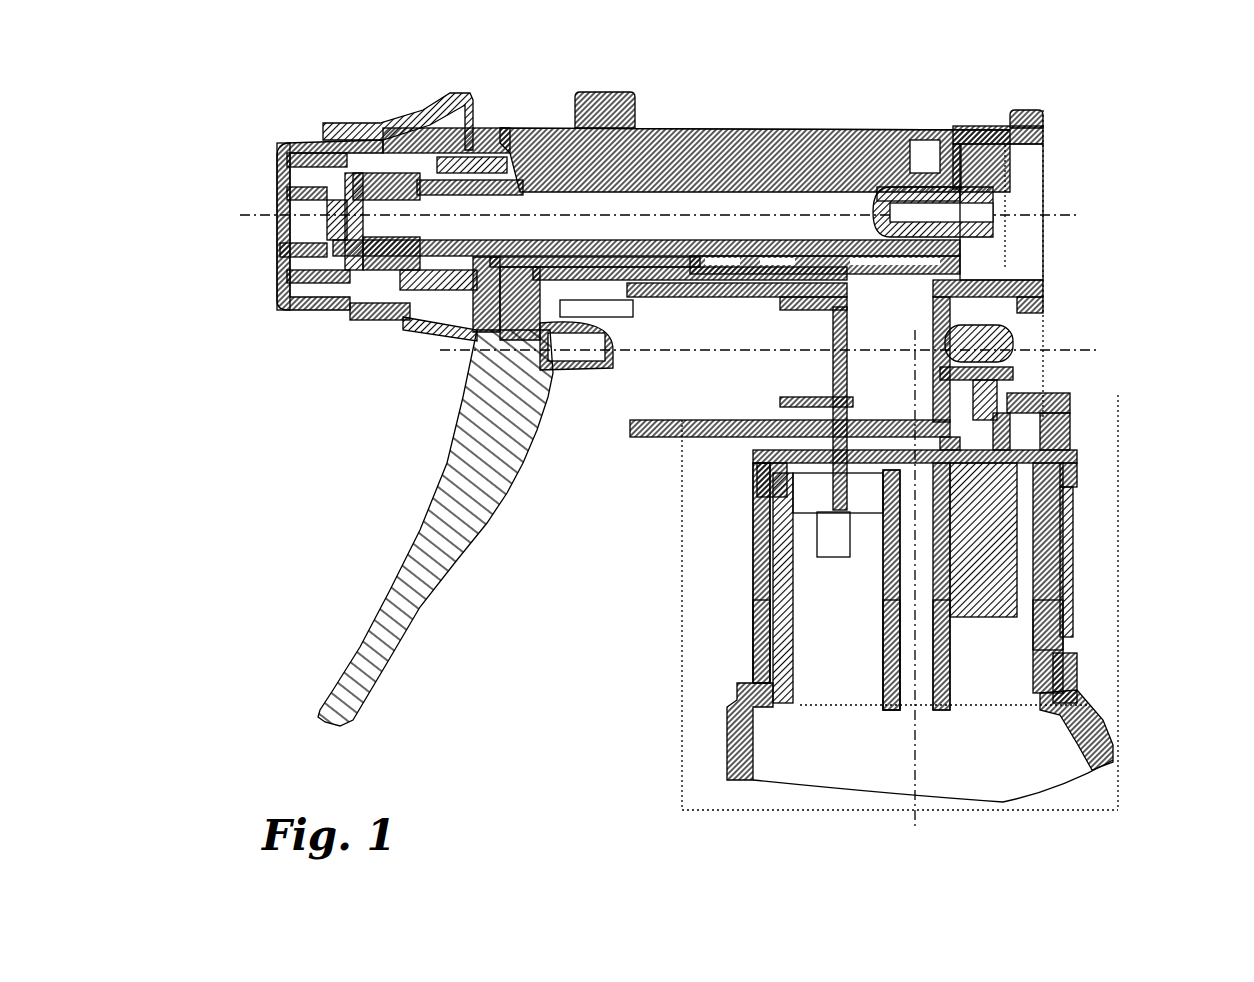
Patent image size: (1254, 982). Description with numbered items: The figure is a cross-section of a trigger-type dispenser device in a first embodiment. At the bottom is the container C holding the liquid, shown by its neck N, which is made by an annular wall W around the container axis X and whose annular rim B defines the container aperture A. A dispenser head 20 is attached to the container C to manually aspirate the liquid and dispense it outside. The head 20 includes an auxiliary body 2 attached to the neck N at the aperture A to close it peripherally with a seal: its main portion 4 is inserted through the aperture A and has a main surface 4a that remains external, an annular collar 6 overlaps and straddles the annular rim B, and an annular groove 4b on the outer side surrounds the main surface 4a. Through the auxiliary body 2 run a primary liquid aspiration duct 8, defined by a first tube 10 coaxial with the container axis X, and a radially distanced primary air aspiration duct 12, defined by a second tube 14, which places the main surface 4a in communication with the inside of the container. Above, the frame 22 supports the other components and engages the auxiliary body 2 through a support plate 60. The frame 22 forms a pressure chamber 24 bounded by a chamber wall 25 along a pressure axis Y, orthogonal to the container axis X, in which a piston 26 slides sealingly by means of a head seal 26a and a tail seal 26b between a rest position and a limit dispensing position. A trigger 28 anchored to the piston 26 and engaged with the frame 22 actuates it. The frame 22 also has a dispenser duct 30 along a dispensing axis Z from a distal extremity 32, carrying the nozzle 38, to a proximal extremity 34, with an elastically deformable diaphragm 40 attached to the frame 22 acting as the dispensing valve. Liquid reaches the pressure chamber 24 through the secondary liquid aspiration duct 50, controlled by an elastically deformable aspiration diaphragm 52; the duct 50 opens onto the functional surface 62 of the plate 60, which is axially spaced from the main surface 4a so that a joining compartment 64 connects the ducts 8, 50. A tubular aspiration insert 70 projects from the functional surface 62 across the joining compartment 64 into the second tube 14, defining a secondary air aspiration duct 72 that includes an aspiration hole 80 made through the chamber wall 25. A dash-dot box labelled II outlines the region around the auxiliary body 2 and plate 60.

The auxiliary body 2 is at (1068, 583).
The main portion 4 is at (1000, 690).
The main surface 4a is at (1040, 440).
The annular groove 4b is at (1065, 550).
The annular collar 6 is at (1066, 478).
The primary liquid aspiration duct 8 is at (930, 695).
The first tube 10 is at (950, 655).
The primary air aspiration duct 12 is at (770, 560).
The second tube 14 is at (780, 510).
The dispenser head 20 is at (238, 193).
The frame 22 is at (748, 121).
The pressure chamber 24 is at (1017, 268).
The chamber wall 25 is at (683, 122).
The piston 26 is at (890, 343).
The head seal 26a is at (868, 190).
The tail seal 26b is at (813, 126).
The trigger 28 is at (392, 547).
The dispenser duct 30 is at (578, 110).
The distal extremity 32 is at (415, 165).
The proximal extremity 34 is at (920, 132).
The nozzle 38 is at (262, 144).
The elastically deformable diaphragm 40 is at (1023, 240).
The secondary liquid aspiration duct 50 is at (985, 410).
The aspiration diaphragm 52 is at (1004, 332).
The support plate 60 is at (1062, 448).
The functional surface 62 is at (1063, 625).
The joining compartment 64 is at (1080, 690).
The tubular aspiration insert 70 is at (760, 440).
The secondary air aspiration duct 72 is at (853, 490).
The aspiration hole 80 is at (815, 395).
The container aperture A is at (1045, 497).
The annular rim B is at (783, 465).
The container C is at (724, 738).
The neck N is at (750, 648).
The annular wall W is at (780, 531).
The container axis X is at (913, 757).
The pressure axis Y is at (440, 350).
The dispensing axis Z is at (250, 232).
The section II is at (1125, 447).